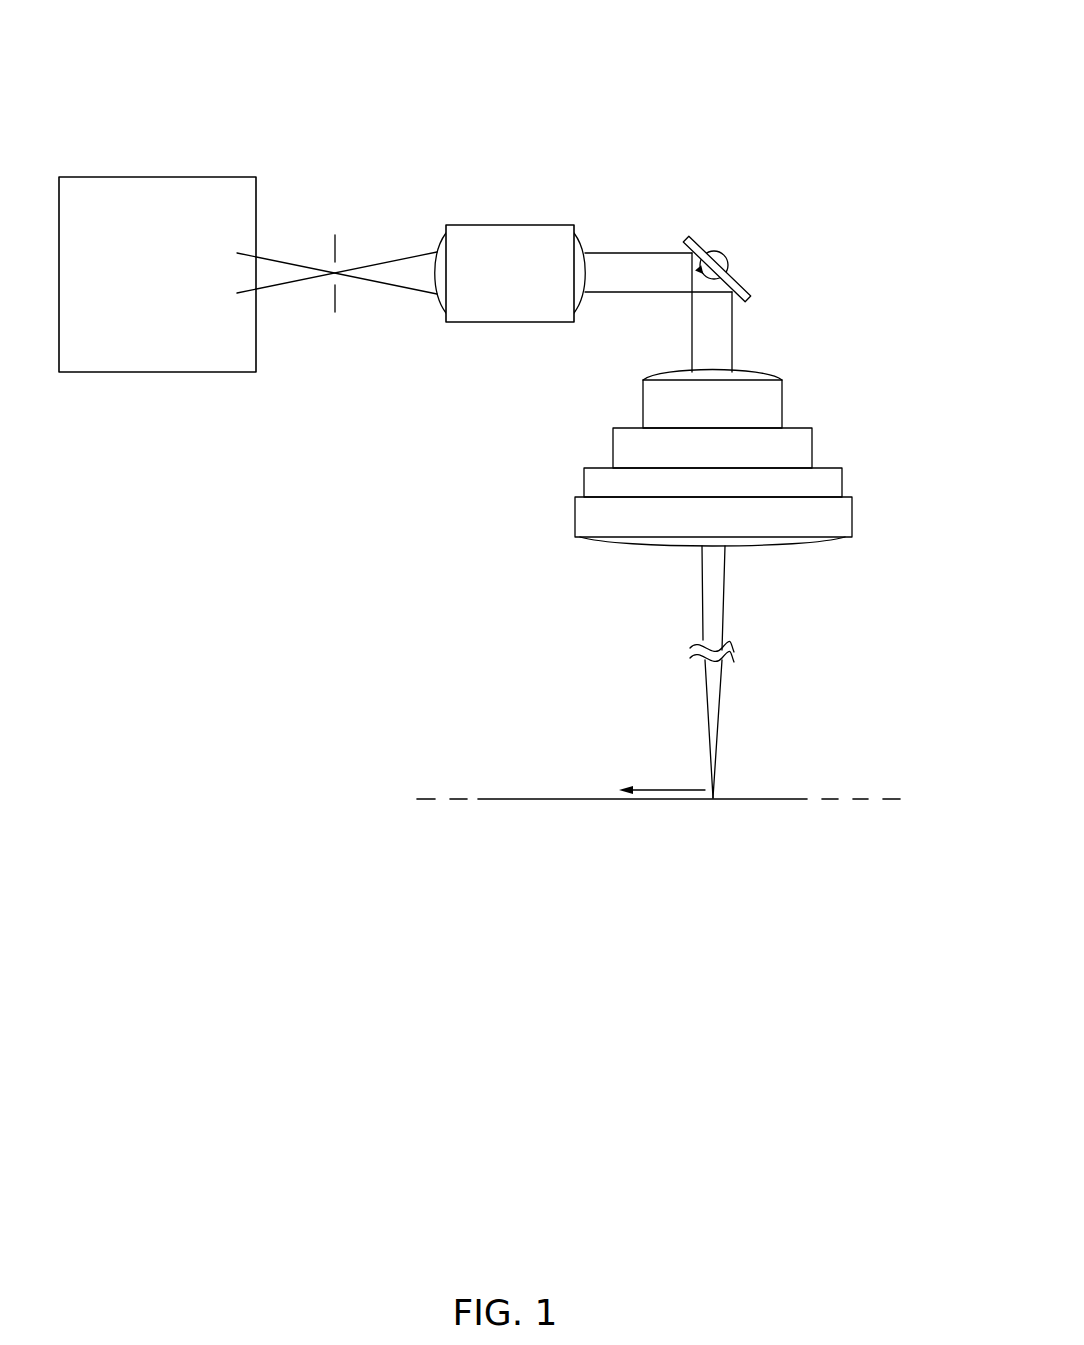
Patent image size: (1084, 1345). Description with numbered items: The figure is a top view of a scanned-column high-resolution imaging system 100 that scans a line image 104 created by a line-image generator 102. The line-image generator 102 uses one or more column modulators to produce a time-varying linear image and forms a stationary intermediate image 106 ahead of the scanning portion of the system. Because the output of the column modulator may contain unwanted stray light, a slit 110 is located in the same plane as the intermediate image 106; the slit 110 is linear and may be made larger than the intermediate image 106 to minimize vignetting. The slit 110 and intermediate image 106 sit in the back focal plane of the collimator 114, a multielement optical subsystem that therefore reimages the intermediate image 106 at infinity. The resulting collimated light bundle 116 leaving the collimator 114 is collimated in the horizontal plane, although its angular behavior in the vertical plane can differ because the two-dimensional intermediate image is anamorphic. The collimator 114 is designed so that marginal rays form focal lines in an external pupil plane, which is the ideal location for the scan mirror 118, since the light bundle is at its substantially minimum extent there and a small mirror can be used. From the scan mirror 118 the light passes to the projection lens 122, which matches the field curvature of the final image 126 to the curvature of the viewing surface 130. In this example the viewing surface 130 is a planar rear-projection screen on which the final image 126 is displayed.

The scanned-column high-resolution imaging system 100 is at (564, 44).
The line-image generator 102 is at (100, 176).
The line image 104 is at (274, 280).
The intermediate image 106 is at (350, 255).
The slit 110 is at (380, 267).
The collimator 114 is at (499, 225).
The collimated light bundle 116 is at (621, 288).
The scan mirror 118 is at (689, 237).
The projection lens 122 is at (562, 456).
The final image 126 is at (738, 786).
The viewing surface 130 is at (692, 800).